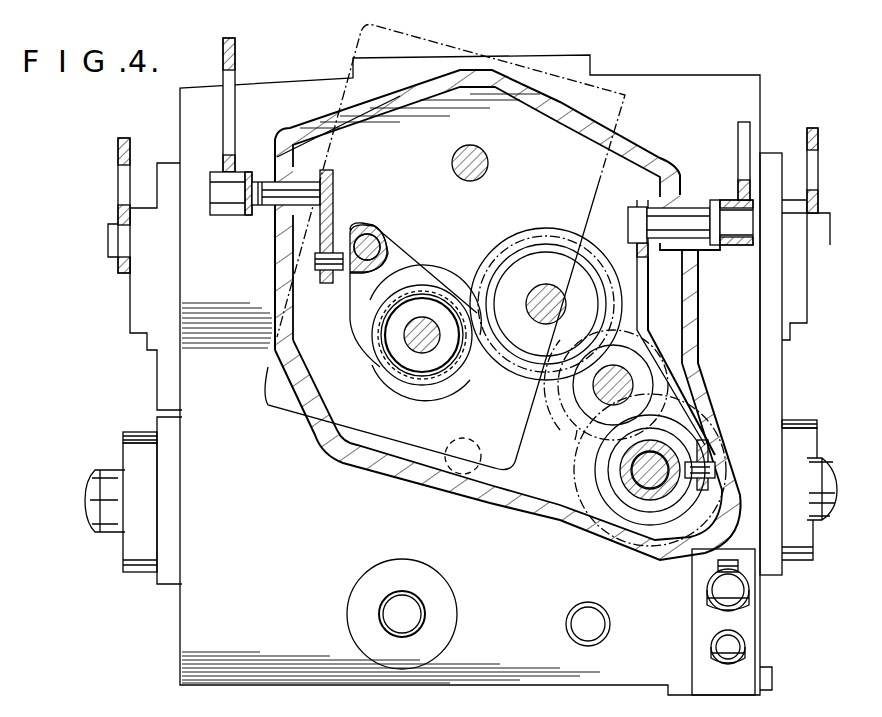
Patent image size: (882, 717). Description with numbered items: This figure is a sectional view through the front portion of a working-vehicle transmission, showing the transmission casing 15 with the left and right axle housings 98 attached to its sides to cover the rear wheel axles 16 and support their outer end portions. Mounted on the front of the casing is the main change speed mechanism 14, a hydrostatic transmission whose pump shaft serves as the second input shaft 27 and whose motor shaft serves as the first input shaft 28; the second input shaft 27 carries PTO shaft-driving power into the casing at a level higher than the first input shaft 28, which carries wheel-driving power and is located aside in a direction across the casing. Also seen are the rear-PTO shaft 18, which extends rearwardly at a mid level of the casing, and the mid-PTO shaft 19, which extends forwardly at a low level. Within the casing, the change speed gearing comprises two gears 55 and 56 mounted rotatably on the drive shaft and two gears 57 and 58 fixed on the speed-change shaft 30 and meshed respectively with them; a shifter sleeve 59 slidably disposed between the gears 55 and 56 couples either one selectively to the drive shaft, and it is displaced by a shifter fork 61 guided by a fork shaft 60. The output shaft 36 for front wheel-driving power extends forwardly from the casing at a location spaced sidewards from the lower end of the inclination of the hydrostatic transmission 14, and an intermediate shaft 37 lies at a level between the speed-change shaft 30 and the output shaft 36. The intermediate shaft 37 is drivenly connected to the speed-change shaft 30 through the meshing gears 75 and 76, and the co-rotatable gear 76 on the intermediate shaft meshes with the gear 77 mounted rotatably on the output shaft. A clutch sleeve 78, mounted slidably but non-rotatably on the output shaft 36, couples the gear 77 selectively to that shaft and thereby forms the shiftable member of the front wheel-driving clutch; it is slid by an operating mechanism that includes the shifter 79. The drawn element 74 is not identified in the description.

The main change speed mechanism 14 is at (268, 365).
The transmission casing 15 is at (655, 160).
The axles 16 is at (110, 535).
The rear-PTO shaft 18 is at (462, 475).
The mid-PTO shaft 19 is at (395, 605).
The second input shaft 27 is at (488, 163).
The first input shaft 28 is at (422, 340).
The speed-change shaft 30 is at (546, 290).
The output shaft 36 is at (643, 488).
The intermediate shaft 37 is at (625, 385).
The gear 55 is at (430, 375).
The gear 56 is at (463, 360).
The gear 57 is at (475, 245).
The gear 58 is at (514, 248).
The shifter sleeve 59 is at (410, 360).
The fork shaft 60 is at (372, 232).
The shifter fork 61 is at (350, 315).
The gear 74 is at (560, 432).
The gear 75 is at (496, 285).
The gear 76 is at (590, 450).
The gear 77 is at (575, 528).
The clutch sleeve 78 is at (657, 500).
The shifter 79 is at (700, 415).
The axle housings 98 is at (140, 434).